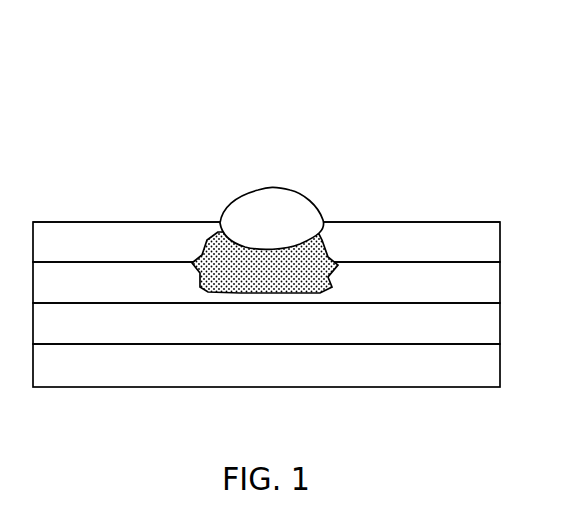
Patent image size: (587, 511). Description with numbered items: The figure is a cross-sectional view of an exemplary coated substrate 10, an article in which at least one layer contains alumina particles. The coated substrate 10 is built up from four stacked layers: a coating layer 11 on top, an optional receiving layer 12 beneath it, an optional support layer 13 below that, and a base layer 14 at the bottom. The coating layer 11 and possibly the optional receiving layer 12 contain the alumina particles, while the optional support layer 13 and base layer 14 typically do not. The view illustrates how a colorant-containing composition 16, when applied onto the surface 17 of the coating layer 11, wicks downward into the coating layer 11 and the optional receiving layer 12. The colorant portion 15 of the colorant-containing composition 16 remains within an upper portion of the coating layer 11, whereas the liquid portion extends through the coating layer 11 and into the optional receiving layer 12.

The coated substrate 10 is at (417, 80).
The coating layer 11 is at (500, 238).
The optional receiving layer 12 is at (500, 282).
The optional support layer 13 is at (500, 332).
The base layer 14 is at (500, 380).
The colorant portion 15 is at (288, 187).
The colorant-containing composition 16 is at (222, 283).
The surface 17 is at (423, 221).